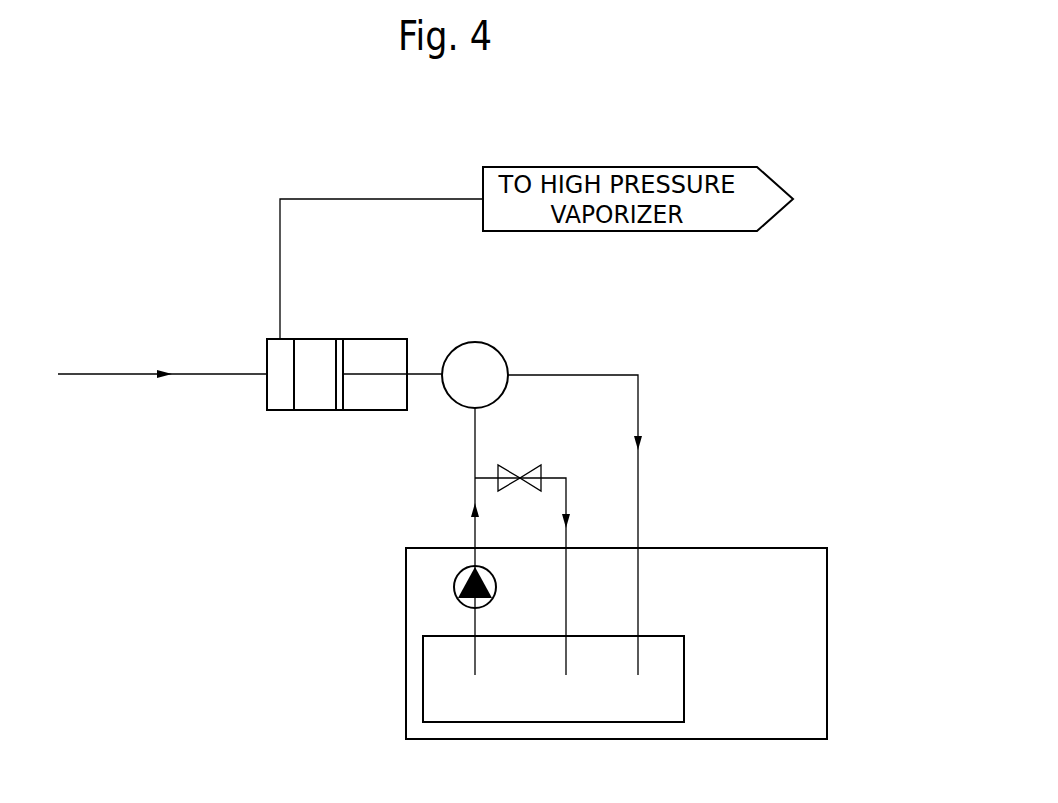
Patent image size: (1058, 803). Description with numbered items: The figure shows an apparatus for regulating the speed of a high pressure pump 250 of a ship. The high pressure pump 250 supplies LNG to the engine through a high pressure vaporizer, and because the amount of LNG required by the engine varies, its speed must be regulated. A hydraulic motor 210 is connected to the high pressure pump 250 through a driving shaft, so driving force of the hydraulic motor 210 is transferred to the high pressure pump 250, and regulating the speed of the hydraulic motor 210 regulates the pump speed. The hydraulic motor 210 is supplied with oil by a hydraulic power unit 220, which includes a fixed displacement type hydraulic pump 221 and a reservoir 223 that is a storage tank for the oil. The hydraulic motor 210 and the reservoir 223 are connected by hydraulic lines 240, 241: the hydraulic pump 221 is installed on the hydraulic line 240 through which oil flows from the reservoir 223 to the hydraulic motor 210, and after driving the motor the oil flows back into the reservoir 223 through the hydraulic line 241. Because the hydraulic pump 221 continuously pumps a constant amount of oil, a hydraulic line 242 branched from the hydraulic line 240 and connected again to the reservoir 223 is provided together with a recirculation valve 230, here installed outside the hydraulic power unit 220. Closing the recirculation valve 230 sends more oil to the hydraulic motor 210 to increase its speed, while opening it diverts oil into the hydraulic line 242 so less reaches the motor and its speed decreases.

The hydraulic motor 210 is at (478, 341).
The hydraulic power unit 220 is at (786, 547).
The fixed displacement type hydraulic pump 221 is at (497, 587).
The reservoir 223 is at (686, 677).
The recirculation valve 230 is at (530, 465).
The hydraulic line 240 is at (474, 449).
The hydraulic line 241 is at (616, 373).
The hydraulic line 242 is at (566, 492).
The high pressure pump 250 is at (322, 338).